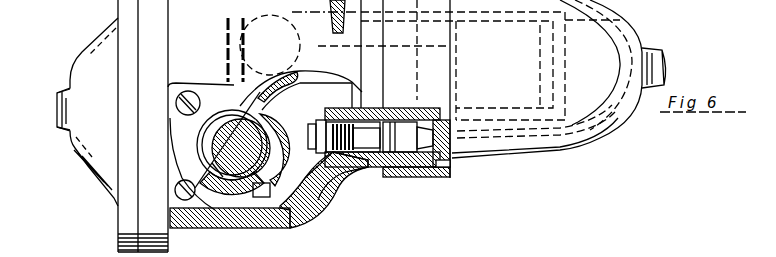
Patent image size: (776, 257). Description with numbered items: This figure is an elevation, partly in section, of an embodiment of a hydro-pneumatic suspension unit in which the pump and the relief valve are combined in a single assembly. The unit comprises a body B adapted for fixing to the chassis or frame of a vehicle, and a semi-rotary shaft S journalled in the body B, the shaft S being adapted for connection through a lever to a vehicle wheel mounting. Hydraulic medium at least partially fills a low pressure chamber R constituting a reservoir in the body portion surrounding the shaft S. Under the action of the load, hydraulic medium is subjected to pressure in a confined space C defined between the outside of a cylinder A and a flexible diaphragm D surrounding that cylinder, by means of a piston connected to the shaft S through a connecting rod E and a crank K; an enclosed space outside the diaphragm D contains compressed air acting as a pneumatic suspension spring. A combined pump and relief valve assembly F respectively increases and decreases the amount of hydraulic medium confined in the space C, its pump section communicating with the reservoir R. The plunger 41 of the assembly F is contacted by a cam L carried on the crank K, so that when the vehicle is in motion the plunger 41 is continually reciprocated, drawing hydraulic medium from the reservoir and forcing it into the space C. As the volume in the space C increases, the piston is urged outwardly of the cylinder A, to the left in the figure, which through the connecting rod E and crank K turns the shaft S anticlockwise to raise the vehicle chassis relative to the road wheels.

The connecting rod E is at (329, 72).
The semi-rotary shaft S is at (195, 188).
The low pressure chamber R is at (213, 205).
The crank K is at (240, 188).
The cam L is at (298, 203).
The body B is at (327, 172).
The plunger 41 is at (302, 128).
The combined pump and relief valve assembly F is at (366, 126).
The cylinder A is at (398, 118).
The confined space C is at (437, 132).
The flexible diaphragm D is at (448, 128).